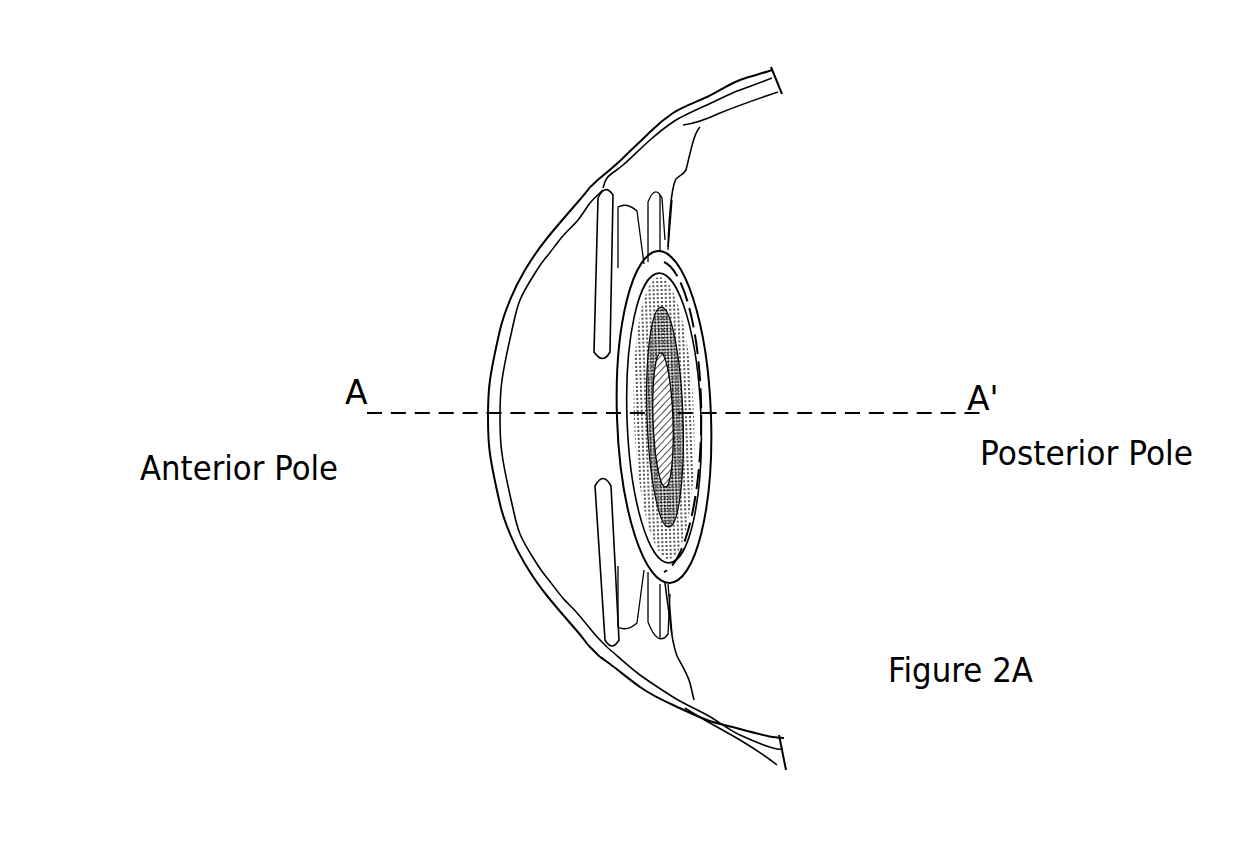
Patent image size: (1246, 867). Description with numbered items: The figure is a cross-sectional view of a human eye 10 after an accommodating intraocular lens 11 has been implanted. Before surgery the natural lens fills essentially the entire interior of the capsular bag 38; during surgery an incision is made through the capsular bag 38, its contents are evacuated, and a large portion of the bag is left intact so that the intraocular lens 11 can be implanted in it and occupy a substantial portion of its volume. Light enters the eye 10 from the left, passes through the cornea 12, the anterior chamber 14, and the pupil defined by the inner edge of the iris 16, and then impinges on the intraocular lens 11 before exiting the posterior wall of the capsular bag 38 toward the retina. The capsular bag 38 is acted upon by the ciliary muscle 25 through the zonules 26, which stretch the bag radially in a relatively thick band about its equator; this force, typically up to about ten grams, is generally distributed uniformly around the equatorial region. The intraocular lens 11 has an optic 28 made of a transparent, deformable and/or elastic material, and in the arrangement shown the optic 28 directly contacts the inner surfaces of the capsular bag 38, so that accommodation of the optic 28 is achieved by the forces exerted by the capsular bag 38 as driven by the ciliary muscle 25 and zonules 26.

The human eye 10 is at (537, 105).
The accommodating intraocular lens 11 is at (594, 440).
The cornea 12 is at (510, 320).
The anterior chamber 14 is at (553, 270).
The iris 16 is at (601, 240).
The ciliary muscle 25 is at (690, 683).
The zonules 26 is at (678, 198).
The optic 28 is at (706, 433).
The capsular bag 38 is at (702, 326).